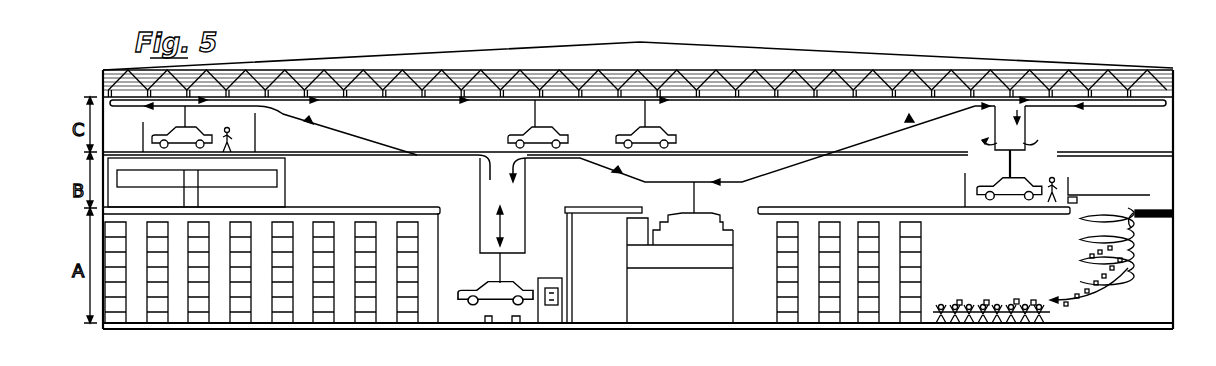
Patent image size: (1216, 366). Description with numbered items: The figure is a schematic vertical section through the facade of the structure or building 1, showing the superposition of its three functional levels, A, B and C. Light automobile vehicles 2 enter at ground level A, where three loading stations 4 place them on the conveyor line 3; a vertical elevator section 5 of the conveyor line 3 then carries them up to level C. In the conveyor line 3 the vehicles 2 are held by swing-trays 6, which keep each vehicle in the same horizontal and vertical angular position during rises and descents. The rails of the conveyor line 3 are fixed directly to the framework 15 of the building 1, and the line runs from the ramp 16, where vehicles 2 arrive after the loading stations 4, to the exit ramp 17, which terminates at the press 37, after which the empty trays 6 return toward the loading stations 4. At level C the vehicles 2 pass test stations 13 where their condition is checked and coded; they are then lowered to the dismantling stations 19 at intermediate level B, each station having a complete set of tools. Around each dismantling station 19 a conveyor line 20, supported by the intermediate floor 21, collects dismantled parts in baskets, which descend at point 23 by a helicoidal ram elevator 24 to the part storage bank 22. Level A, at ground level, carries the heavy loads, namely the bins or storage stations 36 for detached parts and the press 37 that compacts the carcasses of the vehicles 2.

The structure or building 1 is at (711, 44).
The light automobile vehicles 2 is at (503, 297).
The conveyor line 3 is at (506, 100).
The loading stations 4 is at (550, 322).
The vertical elevator section 5 is at (505, 198).
The swing-trays 6 is at (537, 124).
The test stations 13 is at (248, 135).
The framework 15 is at (1140, 76).
The ramp 16 is at (363, 130).
The exit ramp 17 is at (893, 128).
The dismantling stations 19 is at (1005, 138).
The conveyor line 20 is at (1135, 192).
The intermediate floor 21 is at (430, 207).
The part storage bank 22 is at (1047, 336).
The descent point 23 is at (1131, 228).
The helicoidal ram elevator 24 is at (1123, 252).
The bins or storage stations 36 is at (345, 336).
The press 37 is at (688, 310).